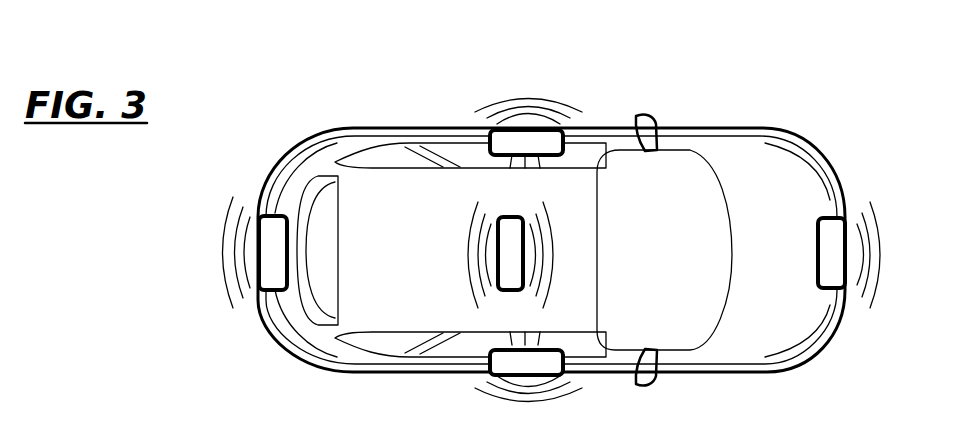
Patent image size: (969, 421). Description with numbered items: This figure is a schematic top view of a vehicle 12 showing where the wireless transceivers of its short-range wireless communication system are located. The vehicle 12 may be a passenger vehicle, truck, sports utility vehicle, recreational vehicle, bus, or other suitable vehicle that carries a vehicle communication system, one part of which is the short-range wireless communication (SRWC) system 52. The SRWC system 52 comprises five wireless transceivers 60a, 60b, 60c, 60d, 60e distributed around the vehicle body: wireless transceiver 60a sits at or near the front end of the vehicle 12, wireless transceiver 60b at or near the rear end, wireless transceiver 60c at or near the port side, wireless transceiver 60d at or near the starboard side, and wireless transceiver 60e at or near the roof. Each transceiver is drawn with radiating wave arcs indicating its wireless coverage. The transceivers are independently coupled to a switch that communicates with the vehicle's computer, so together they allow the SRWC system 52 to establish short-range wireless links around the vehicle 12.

The vehicle 12 is at (786, 126).
The short-range wireless communication (SRWC) system 52 is at (262, 116).
The wireless transceiver 60a is at (842, 218).
The wireless transceiver 60b is at (260, 216).
The wireless transceiver 60c is at (491, 131).
The wireless transceiver 60d is at (491, 350).
The wireless transceiver 60e is at (512, 217).